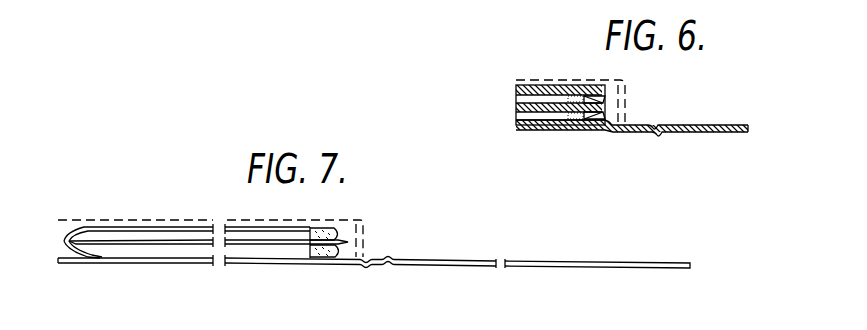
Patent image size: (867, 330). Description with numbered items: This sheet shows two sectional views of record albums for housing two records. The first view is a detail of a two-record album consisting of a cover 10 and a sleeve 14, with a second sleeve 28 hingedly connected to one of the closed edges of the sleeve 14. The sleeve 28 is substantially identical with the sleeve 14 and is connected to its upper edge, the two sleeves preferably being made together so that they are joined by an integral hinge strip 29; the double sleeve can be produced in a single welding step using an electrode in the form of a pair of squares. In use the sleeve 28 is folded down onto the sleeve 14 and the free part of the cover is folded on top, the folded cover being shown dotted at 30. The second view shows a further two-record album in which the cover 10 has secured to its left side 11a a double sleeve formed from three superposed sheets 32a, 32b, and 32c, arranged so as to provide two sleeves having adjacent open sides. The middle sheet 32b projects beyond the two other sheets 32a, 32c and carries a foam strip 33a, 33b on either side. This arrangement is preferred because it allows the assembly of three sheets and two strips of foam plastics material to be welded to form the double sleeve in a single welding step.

In FIG. 6, the cover 10 is at (611, 135).
In FIG. 7, the cover 10 is at (489, 271).
In FIG. 7, the left side of the cover 11a is at (240, 264).
In FIG. 6, the sleeve 14 is at (521, 117).
In FIG. 6, the second sleeve 28 is at (518, 92).
In FIG. 6, the integral hinge strip 29 is at (604, 107).
In FIG. 6, the folded cover 30 is at (547, 80).
In FIG. 7, the superposed sheet 32a is at (197, 225).
In FIG. 7, the middle sheet 32b is at (143, 240).
In FIG. 7, the superposed sheet 32c is at (101, 257).
In FIG. 7, the foam strip 33a is at (332, 237).
In FIG. 7, the foam strip 33b is at (338, 257).